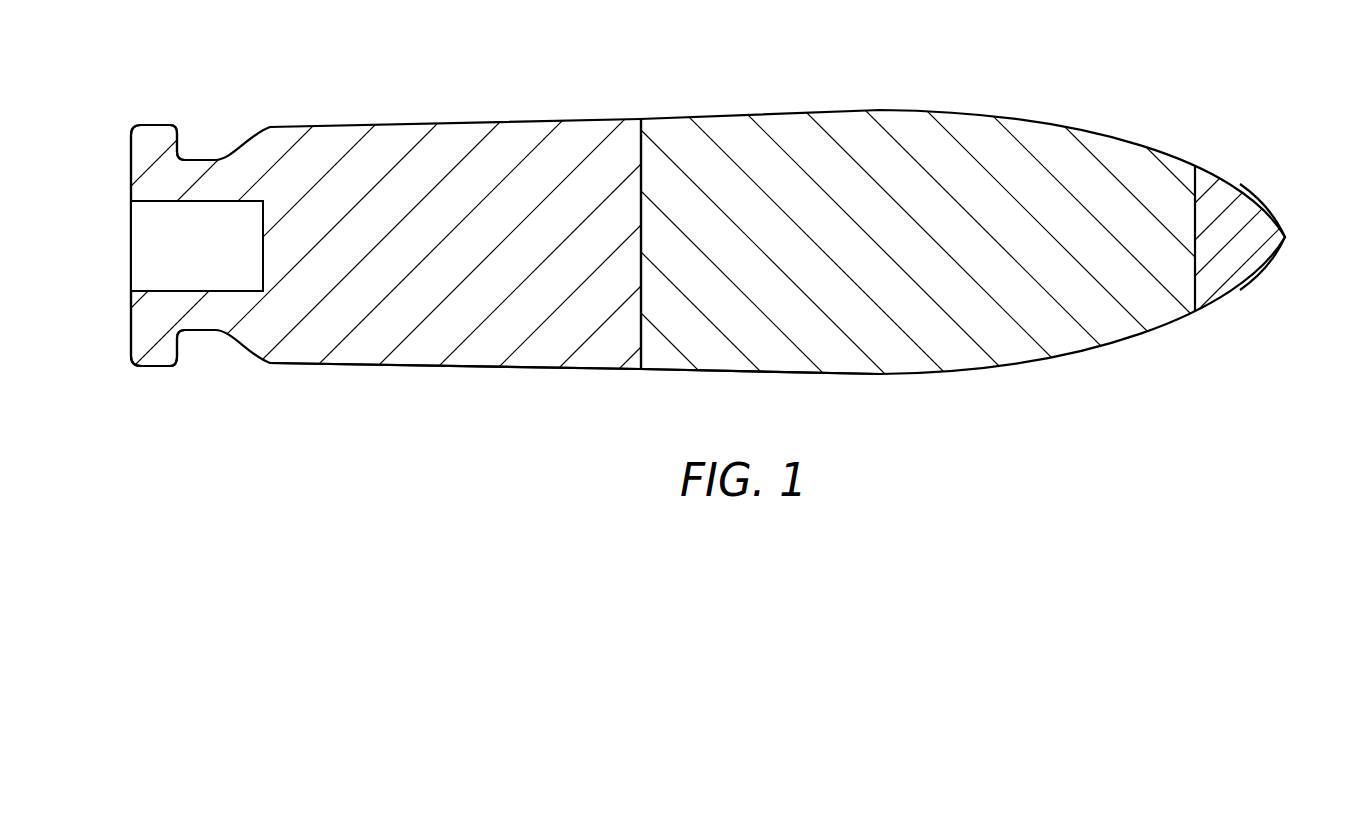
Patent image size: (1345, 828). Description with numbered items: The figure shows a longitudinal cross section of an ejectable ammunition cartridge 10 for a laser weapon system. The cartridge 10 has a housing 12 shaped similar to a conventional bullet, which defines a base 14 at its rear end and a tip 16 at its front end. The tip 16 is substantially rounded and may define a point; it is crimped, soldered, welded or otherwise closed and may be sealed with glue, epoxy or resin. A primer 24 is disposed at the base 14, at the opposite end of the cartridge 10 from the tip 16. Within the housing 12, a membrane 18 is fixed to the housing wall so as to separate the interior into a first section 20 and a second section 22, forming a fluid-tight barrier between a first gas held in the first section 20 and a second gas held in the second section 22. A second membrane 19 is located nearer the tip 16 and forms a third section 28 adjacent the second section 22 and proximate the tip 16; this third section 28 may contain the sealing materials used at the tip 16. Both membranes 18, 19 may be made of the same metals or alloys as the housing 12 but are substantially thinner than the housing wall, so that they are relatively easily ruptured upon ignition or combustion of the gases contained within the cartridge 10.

The ejectable ammunition cartridge 10 is at (940, 95).
The housing 12 is at (890, 375).
The base 14 is at (116, 307).
The tip 16 is at (1294, 221).
The membrane 18 is at (643, 257).
The membrane 19 is at (1195, 230).
The first section 20 is at (448, 260).
The second section 22 is at (868, 258).
The primer 24 is at (251, 285).
The third section 28 is at (1250, 255).